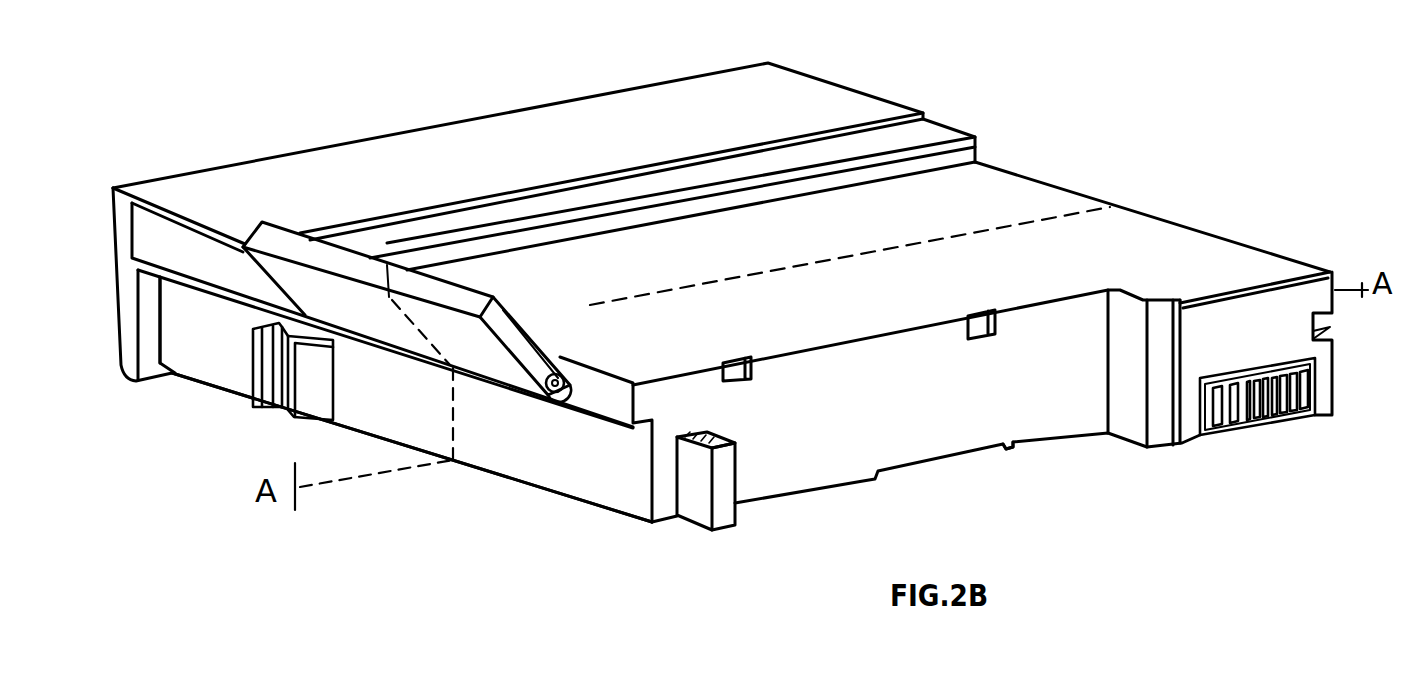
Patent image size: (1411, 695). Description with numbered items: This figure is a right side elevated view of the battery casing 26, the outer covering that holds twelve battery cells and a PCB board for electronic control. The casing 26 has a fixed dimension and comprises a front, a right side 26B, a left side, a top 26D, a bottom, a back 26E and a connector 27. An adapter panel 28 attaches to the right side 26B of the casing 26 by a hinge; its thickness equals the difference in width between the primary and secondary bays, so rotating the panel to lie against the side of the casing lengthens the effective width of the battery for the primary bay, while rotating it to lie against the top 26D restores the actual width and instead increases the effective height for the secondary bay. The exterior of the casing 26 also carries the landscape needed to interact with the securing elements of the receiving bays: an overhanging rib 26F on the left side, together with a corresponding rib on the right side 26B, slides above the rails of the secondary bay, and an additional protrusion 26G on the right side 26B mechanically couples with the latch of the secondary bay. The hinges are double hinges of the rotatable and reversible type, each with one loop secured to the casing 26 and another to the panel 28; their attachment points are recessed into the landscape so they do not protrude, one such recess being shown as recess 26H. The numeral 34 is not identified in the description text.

The casing 26 is at (957, 73).
The right side 26B is at (507, 458).
The top 26D is at (1025, 200).
The back 26E is at (610, 400).
The overhanging rib 26F is at (1318, 292).
The protrusion 26G is at (310, 412).
The recess 26H is at (586, 355).
The connector 27 is at (1267, 427).
The adapter panel 28 is at (517, 315).
The slot 34 is at (452, 342).